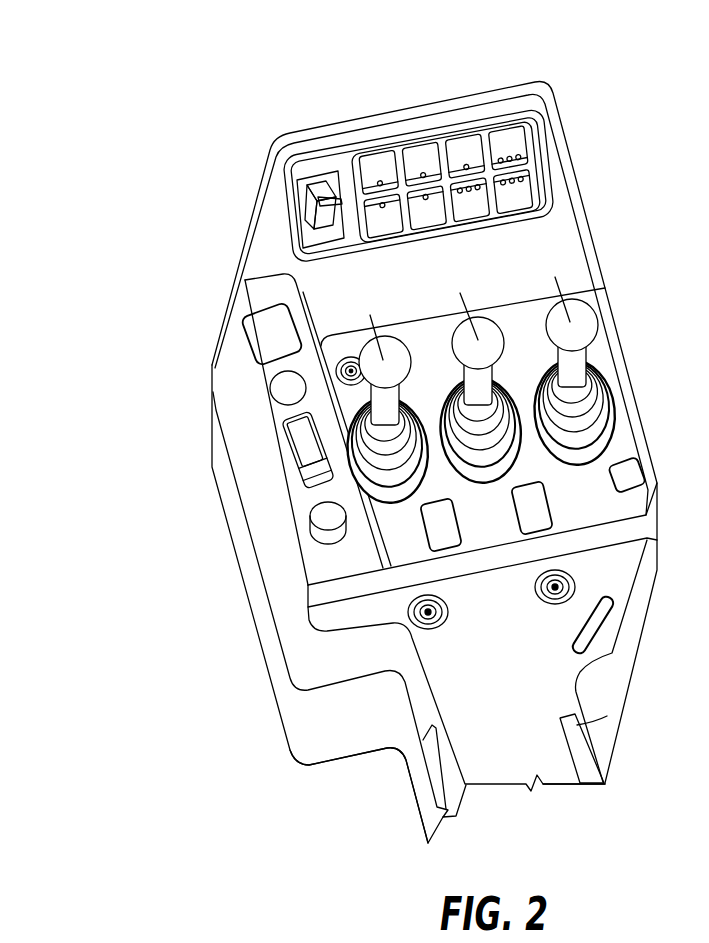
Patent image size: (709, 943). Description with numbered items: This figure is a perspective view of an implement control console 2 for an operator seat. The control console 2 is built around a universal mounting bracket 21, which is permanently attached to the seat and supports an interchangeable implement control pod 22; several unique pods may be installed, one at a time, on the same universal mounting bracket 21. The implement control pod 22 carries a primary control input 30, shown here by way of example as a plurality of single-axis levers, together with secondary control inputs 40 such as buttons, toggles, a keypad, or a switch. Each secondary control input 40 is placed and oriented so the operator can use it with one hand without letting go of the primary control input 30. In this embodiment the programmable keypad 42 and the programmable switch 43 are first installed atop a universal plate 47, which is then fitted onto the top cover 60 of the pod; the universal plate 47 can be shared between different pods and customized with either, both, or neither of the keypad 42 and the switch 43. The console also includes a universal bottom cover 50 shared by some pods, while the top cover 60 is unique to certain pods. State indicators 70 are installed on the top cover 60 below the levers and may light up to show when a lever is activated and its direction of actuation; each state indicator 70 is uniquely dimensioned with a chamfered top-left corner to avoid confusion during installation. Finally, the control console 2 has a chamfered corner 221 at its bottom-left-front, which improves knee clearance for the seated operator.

The implement control console 2 is at (108, 148).
The universal mounting bracket 21 is at (637, 779).
The implement control pod 22 is at (636, 705).
The chamfered corner 221 is at (250, 202).
The primary control input 30 is at (383, 360).
The secondary control input 40 is at (288, 388).
The programmable keypad 42 is at (318, 187).
The programmable switch 43 is at (503, 147).
The universal plate 47 is at (545, 160).
The universal bottom cover 50 is at (318, 733).
The top cover 60 is at (320, 667).
The state indicator 70 is at (260, 327).